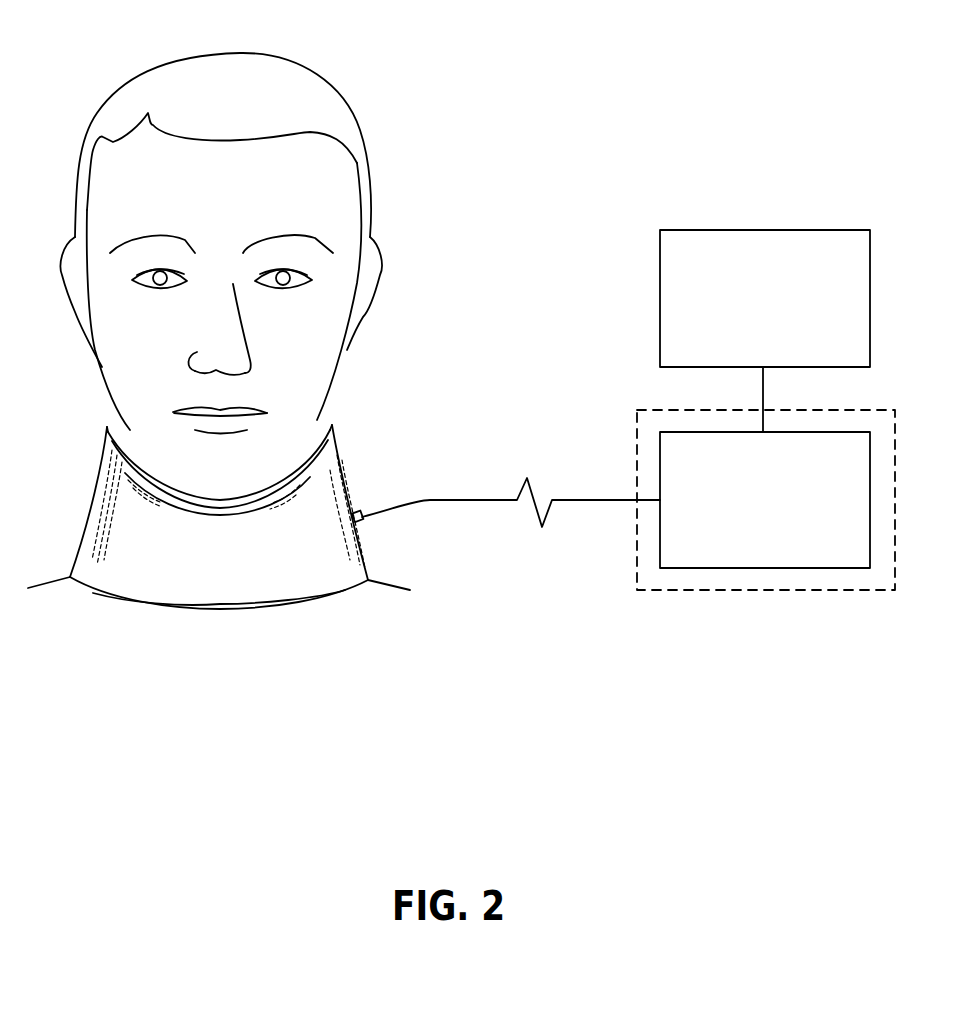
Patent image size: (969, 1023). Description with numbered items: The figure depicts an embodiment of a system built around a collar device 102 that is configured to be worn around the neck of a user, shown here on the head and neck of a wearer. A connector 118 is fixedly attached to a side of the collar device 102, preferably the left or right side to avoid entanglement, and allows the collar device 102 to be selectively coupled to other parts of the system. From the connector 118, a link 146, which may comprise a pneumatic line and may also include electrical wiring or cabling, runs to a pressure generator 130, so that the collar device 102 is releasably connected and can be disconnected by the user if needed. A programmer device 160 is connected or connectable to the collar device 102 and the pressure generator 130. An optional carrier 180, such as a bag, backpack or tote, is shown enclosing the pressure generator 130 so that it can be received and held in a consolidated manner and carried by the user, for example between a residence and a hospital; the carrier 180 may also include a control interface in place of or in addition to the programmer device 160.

The collar device 102 is at (248, 623).
The connector 118 is at (357, 517).
The link 146 is at (443, 502).
The programmer device 160 is at (802, 230).
The pressure generator 130 is at (790, 568).
The carrier 180 is at (692, 592).